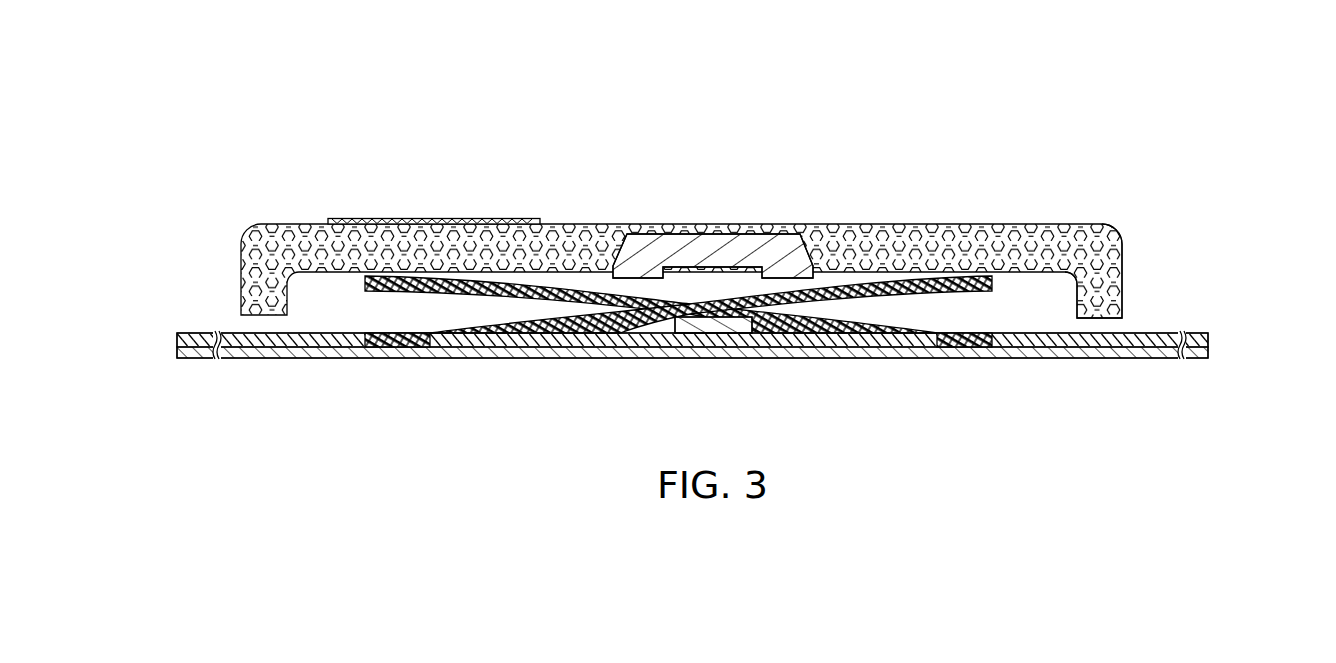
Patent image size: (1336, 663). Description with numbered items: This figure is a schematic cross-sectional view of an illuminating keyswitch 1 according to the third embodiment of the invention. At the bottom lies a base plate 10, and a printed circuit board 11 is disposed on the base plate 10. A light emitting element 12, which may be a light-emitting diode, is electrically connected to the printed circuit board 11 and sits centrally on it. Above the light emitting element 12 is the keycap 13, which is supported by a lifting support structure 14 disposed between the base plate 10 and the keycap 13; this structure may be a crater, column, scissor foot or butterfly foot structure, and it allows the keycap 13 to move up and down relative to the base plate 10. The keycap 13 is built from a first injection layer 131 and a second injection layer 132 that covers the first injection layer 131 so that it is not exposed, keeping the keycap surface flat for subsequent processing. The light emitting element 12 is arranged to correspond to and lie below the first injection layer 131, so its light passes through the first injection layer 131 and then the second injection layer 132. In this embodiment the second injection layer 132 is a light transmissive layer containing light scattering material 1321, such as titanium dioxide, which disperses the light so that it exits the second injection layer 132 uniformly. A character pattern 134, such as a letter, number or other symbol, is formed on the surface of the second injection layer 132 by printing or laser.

The illuminating keyswitch 1 is at (263, 147).
The base plate 10 is at (1020, 360).
The printed circuit board 11 is at (1210, 340).
The light emitting element 12 is at (757, 324).
The keycap 13 is at (250, 227).
The first injection layer 131 is at (713, 235).
The second injection layer 132 is at (922, 225).
The light scattering material 1321 is at (1030, 243).
The character pattern 134 is at (435, 220).
The lifting support structure 14 is at (995, 302).